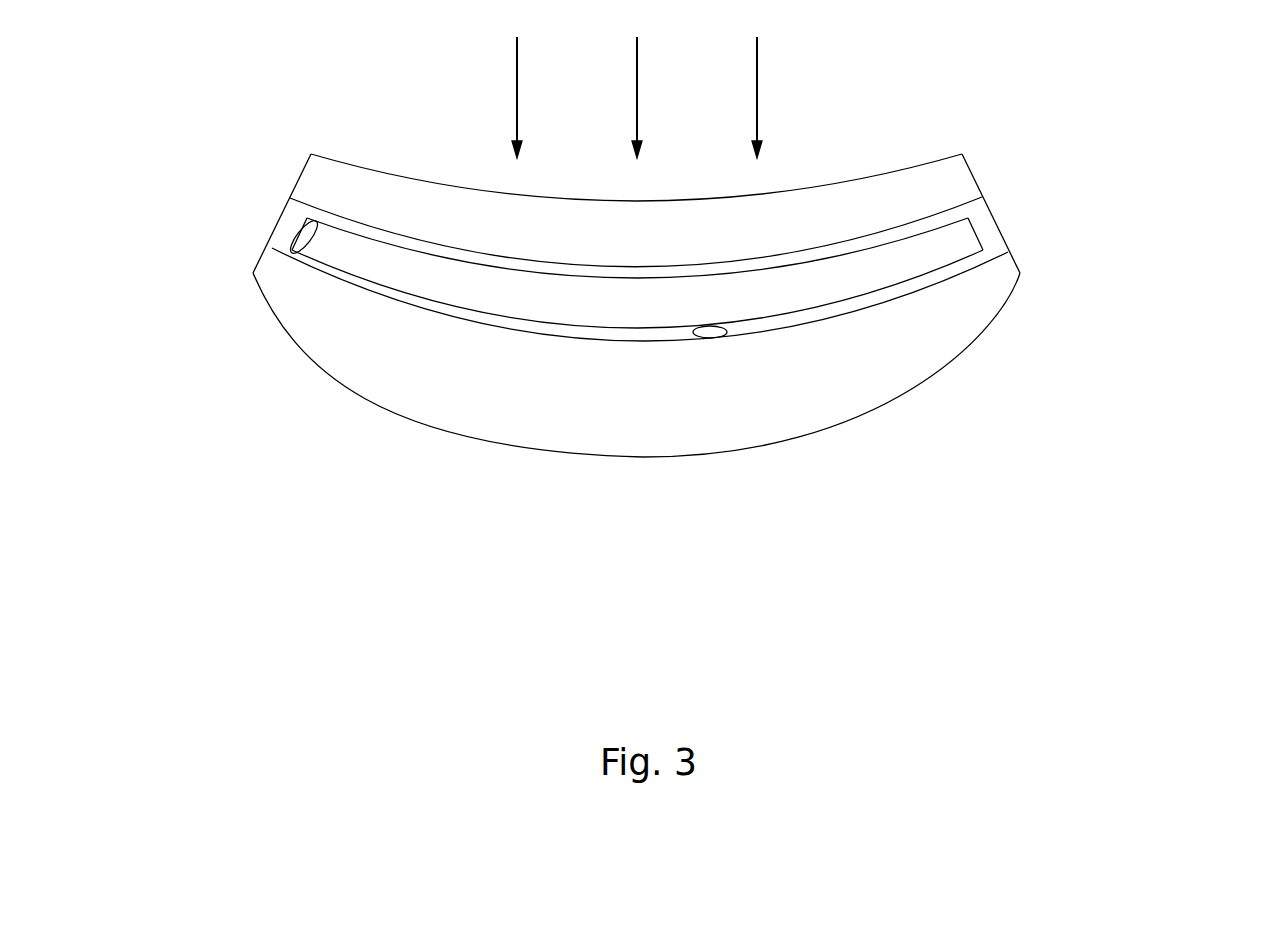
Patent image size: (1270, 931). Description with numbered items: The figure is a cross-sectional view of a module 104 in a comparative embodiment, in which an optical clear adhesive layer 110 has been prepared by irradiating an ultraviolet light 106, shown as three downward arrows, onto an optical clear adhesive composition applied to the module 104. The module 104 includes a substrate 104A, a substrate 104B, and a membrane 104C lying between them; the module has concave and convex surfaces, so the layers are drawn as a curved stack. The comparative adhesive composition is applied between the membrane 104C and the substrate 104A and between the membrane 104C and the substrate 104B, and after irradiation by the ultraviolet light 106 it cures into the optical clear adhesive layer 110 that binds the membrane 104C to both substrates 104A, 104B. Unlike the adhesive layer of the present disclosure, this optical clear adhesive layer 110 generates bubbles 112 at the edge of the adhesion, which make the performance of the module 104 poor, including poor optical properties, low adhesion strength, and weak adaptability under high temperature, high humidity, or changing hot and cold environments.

The module 104 is at (701, 345).
The substrate 104A is at (992, 275).
The substrate 104B is at (957, 183).
The membrane 104C is at (960, 238).
The ultraviolet light 106 is at (757, 90).
The optical clear adhesive layer 110 is at (287, 228).
The bubbles 112 is at (305, 240).